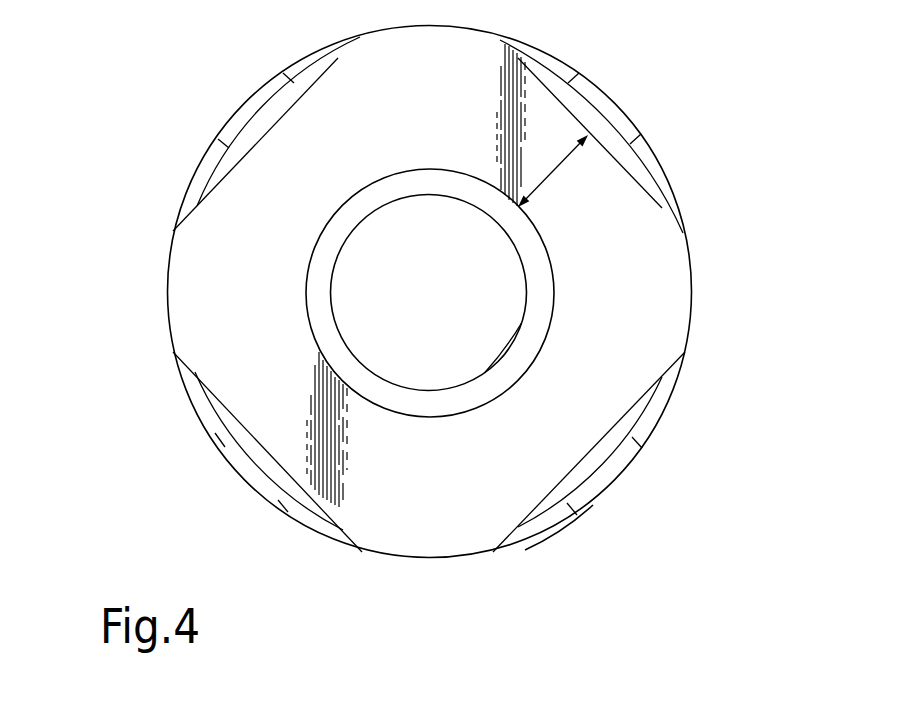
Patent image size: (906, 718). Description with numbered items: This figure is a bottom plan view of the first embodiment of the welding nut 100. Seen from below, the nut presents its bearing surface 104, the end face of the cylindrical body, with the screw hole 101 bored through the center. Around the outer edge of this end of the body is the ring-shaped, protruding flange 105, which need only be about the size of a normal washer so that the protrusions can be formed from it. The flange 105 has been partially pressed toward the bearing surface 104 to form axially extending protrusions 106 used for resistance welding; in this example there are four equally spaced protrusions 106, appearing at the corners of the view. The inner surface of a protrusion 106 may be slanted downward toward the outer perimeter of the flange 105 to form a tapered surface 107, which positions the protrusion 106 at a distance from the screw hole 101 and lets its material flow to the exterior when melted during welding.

The welding nut 100 is at (256, 81).
The screw hole 101 is at (408, 392).
The bearing surface 104 is at (188, 317).
The flange 105 is at (560, 527).
The protrusions 106 is at (232, 125).
The tapered surface 107 is at (620, 427).